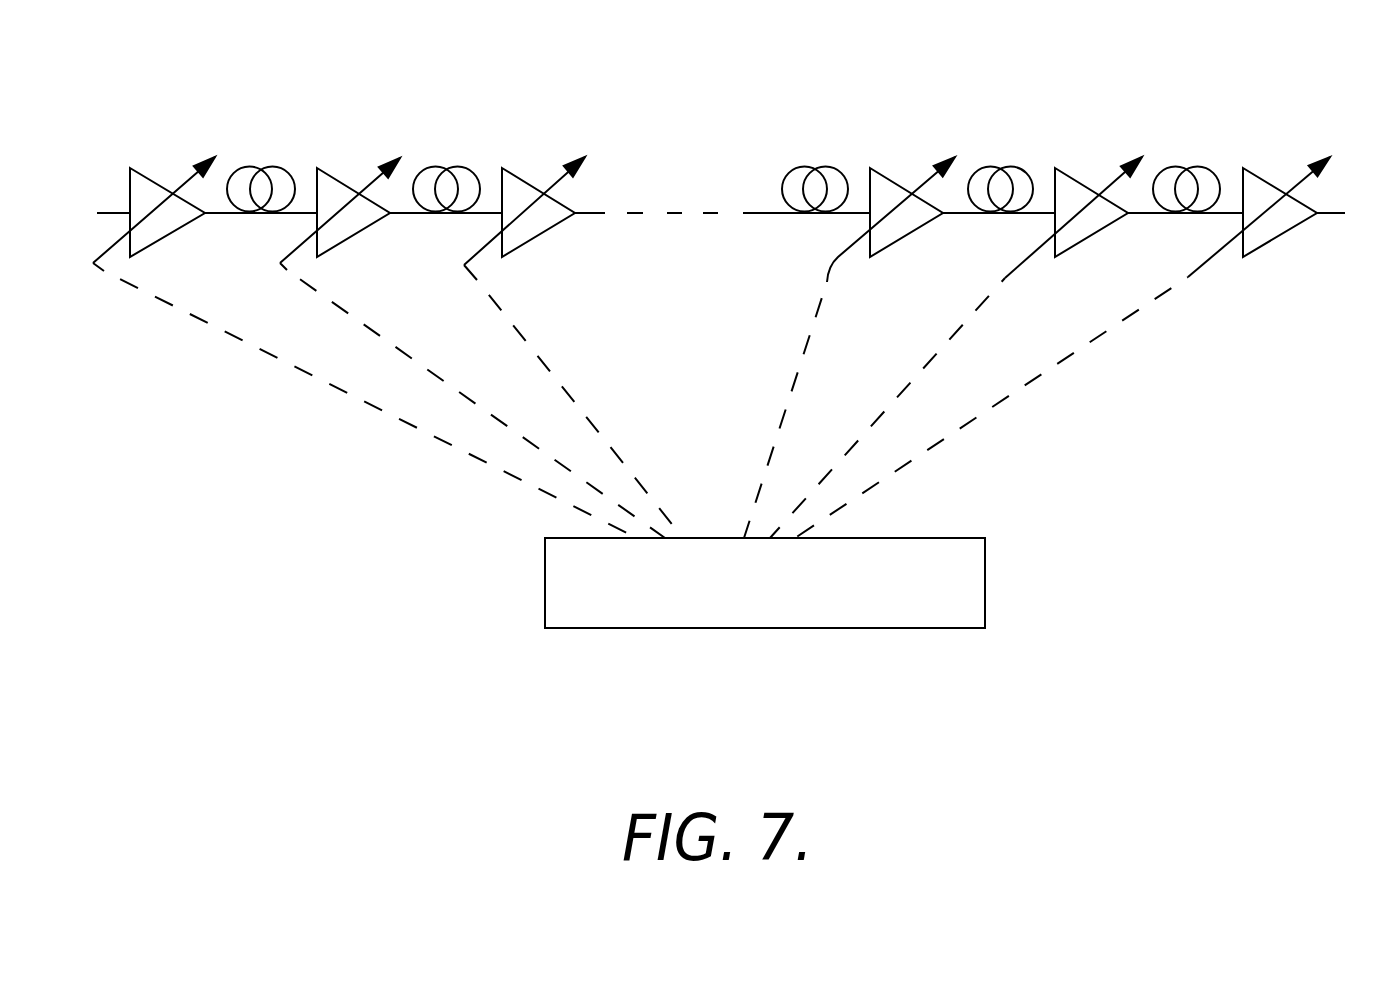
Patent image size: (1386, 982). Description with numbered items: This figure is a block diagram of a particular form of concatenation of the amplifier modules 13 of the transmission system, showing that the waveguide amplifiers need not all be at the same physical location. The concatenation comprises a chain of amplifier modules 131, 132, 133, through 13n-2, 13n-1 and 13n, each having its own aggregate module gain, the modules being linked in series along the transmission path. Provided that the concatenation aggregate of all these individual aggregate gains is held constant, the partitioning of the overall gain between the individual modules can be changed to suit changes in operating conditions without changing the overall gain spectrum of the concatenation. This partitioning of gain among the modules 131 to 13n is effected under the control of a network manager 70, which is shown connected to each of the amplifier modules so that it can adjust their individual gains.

The amplifier module 13 is at (730, 171).
The amplifier module 131 is at (143, 197).
The amplifier module 132 is at (333, 197).
The amplifier module 133 is at (515, 195).
The amplifier module 13n-2 is at (878, 188).
The amplifier module 13n-1 is at (1067, 190).
The amplifier module 13n is at (1255, 192).
The network manager 70 is at (940, 548).